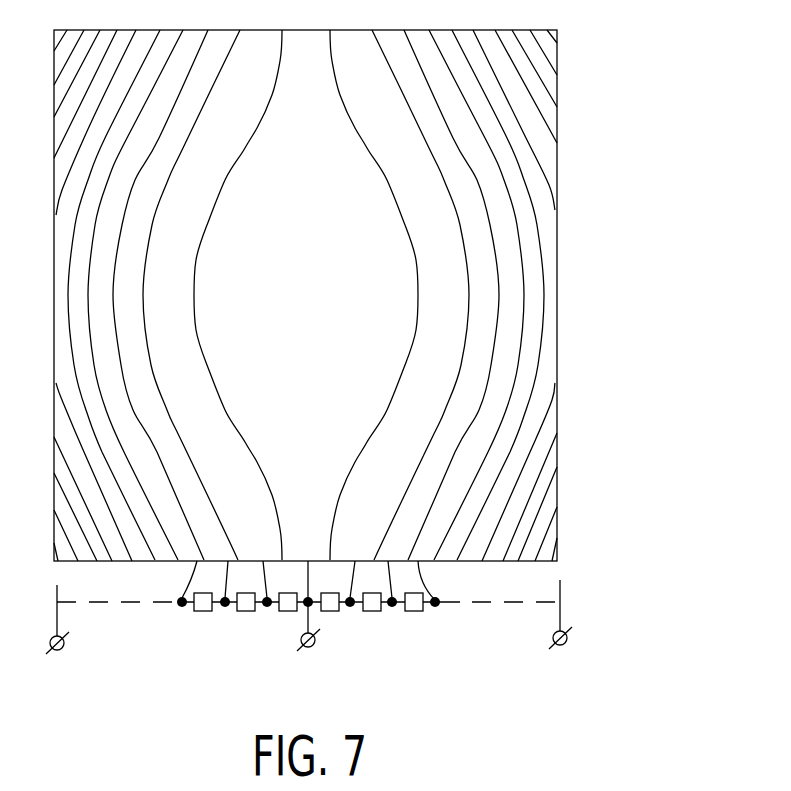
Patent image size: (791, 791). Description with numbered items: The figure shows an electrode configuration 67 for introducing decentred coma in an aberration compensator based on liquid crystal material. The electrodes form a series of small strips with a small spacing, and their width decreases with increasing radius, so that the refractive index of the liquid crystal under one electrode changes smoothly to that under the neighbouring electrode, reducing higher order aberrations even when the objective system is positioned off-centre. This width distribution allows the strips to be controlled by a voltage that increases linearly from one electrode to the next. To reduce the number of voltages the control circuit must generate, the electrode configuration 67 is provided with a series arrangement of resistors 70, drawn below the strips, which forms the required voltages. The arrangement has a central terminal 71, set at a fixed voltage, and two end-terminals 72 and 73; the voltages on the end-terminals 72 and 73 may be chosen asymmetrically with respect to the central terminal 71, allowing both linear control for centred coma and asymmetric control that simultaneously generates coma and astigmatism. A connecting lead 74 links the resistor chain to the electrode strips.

The electrode configuration 67 is at (660, 50).
The resistors 70 is at (414, 611).
The central terminal 71 is at (309, 620).
The end-terminal 72 is at (57, 635).
The end-terminal 73 is at (561, 630).
The connecting lead 74 is at (430, 588).